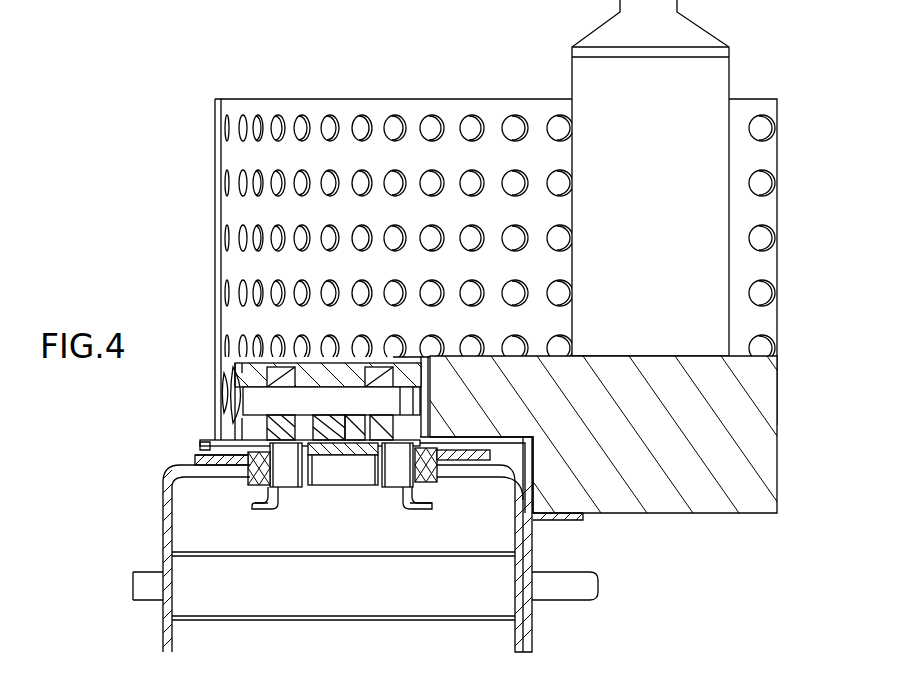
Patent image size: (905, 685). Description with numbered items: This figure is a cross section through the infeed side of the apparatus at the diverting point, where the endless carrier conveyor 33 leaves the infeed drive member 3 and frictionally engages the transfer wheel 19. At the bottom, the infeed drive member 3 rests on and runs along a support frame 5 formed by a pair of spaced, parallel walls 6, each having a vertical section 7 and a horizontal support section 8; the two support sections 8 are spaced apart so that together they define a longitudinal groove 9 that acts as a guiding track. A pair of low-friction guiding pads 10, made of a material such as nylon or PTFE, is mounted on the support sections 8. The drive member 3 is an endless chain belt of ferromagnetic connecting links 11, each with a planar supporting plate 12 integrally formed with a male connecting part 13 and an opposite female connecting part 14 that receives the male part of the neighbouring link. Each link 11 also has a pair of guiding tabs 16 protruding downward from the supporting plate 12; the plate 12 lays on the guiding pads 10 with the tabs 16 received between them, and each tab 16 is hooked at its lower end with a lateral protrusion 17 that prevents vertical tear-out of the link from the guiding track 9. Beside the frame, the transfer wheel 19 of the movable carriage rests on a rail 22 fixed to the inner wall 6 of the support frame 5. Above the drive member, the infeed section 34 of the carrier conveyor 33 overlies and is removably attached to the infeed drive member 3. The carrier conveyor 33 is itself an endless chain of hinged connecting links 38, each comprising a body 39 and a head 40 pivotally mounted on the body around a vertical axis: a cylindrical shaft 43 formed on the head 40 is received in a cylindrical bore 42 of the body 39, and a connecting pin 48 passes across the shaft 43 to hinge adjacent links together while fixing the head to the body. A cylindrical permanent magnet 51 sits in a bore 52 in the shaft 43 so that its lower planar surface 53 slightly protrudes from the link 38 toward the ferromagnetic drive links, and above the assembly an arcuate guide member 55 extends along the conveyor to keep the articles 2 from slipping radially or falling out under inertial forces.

The article 2 is at (703, 77).
The infeed drive member 3 is at (203, 441).
The support frame 5 is at (160, 523).
The wall 6 is at (347, 564).
The vertical section 7 is at (163, 547).
The horizontal support section 8 is at (205, 465).
The longitudinal groove 9 is at (437, 479).
The guiding pad 10 is at (195, 457).
The connecting link 11 is at (200, 445).
The supporting plate 12 is at (237, 447).
The male connecting part 13 is at (355, 482).
The female connecting part 14 is at (276, 474).
The guiding tab 16 is at (276, 494).
The lateral protrusion 17 is at (260, 507).
The transfer wheel 19 is at (652, 492).
The rail 22 is at (553, 518).
The endless carrier conveyor 33 is at (236, 372).
The infeed section 34 is at (236, 372).
The connecting link 38 is at (238, 362).
The body 39 is at (413, 377).
The head 40 is at (337, 370).
The cylindrical bore 42 is at (407, 420).
The cylindrical shaft 43 is at (292, 425).
The connecting pin 48 is at (316, 397).
The cylindrical permanent magnet 51 is at (332, 437).
The bore 52 is at (313, 438).
The lower planar surface 53 is at (320, 446).
The arcuate guide member 55 is at (295, 103).